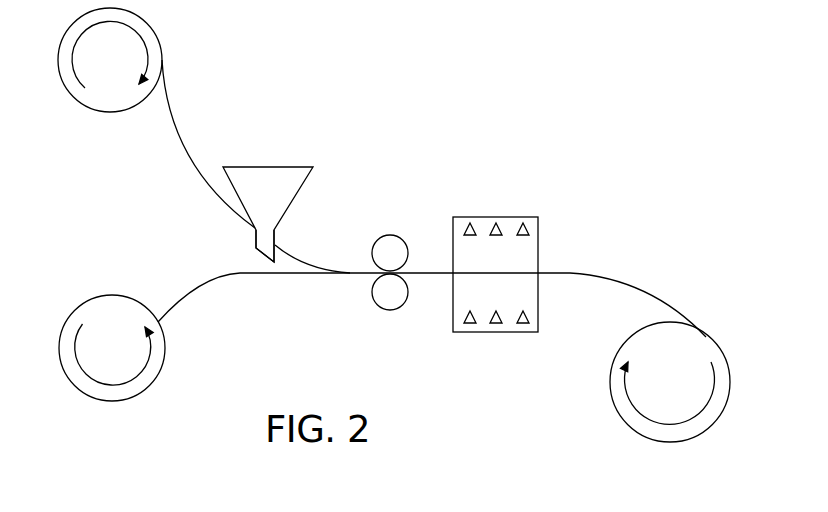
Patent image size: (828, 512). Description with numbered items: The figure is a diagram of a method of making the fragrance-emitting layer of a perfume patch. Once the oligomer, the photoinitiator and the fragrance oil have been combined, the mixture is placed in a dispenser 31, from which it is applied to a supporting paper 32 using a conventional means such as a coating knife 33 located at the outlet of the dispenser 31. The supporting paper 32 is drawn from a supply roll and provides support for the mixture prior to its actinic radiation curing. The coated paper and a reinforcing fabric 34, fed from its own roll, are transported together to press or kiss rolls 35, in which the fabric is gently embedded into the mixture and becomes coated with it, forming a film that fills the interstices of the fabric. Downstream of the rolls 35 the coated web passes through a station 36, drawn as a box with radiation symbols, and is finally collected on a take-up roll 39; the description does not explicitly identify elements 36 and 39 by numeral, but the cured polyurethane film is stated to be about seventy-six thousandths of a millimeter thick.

The dispenser 31 is at (287, 167).
The supporting paper 32 is at (142, 392).
The coating knife 33 is at (260, 258).
The reinforcing fabric 34 is at (160, 34).
The press or kiss rolls 35 is at (372, 259).
The heating / curing station 36 is at (498, 216).
The take-up roll 39 is at (616, 412).